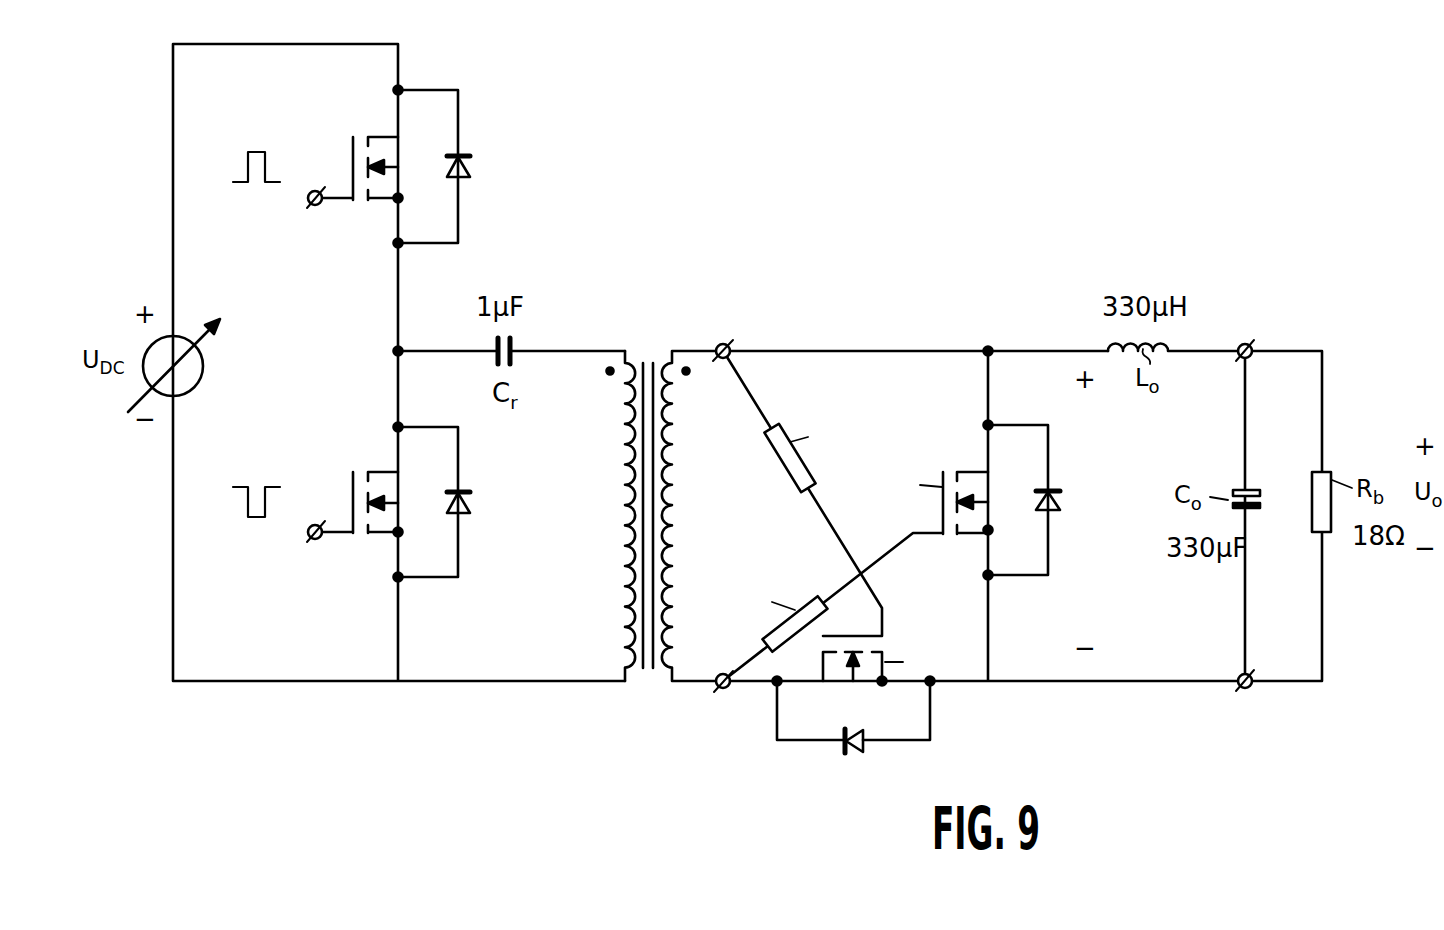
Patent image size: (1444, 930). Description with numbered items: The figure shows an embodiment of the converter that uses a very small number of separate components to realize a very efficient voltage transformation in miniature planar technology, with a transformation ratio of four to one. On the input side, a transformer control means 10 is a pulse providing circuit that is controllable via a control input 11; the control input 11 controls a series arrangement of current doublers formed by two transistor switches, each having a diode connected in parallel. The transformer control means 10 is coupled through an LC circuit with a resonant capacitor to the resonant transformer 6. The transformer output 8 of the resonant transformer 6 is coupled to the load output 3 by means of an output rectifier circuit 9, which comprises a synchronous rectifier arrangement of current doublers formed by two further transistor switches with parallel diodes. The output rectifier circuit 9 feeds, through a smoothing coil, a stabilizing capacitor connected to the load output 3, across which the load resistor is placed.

The load output 3 is at (1247, 344).
The resonant transformer 6 is at (650, 320).
The transformer output 8 is at (723, 344).
The output rectifier circuit 9 is at (950, 320).
The transformer control means 10 is at (508, 146).
The control input 11 is at (315, 205).